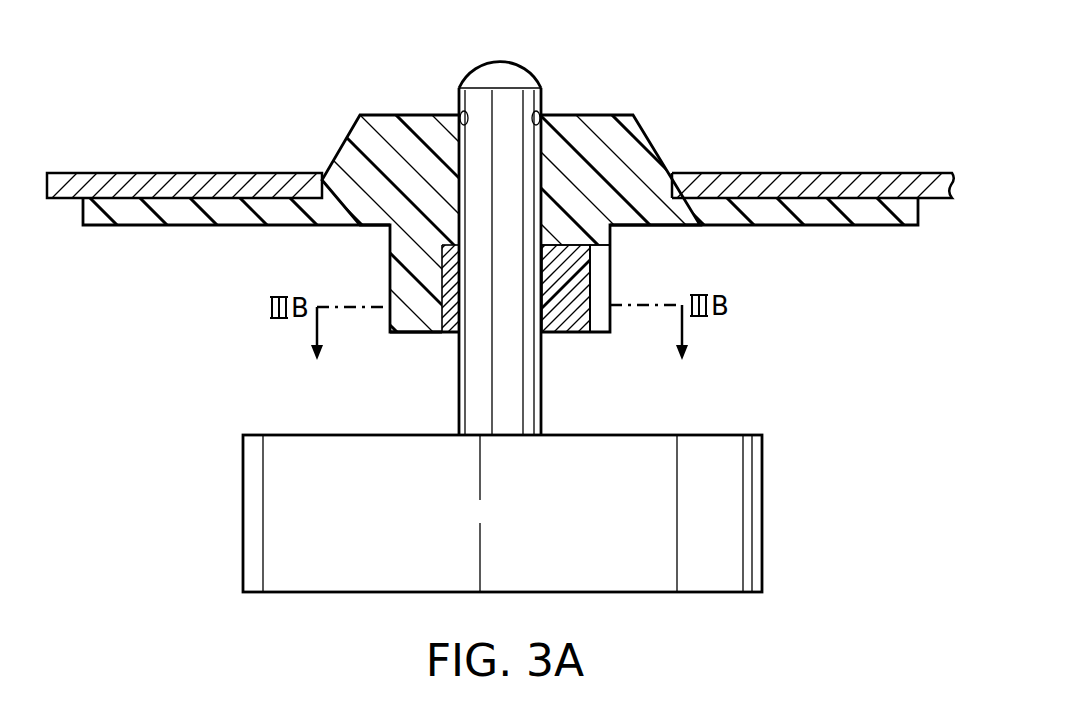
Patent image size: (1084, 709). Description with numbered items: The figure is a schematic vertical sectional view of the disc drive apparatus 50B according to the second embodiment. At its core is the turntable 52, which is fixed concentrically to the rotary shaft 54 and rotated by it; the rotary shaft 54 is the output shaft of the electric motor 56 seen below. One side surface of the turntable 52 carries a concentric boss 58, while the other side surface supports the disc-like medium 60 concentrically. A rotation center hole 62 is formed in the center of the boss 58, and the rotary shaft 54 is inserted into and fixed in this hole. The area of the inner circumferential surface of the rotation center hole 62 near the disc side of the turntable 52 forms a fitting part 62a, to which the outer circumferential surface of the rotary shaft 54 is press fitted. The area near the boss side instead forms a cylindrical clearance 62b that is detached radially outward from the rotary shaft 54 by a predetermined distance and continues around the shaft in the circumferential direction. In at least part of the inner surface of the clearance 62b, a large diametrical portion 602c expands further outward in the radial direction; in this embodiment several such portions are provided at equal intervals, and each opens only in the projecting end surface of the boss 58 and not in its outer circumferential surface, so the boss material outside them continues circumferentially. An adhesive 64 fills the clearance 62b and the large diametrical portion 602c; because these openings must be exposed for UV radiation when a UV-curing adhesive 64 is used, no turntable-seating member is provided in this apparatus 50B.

The rotary shaft 54 is at (497, 62).
The rotation center hole 62 is at (457, 108).
The fitting part 62a is at (538, 108).
The clearance 62b is at (447, 333).
The boss 58 is at (392, 334).
The adhesive 64 is at (560, 336).
The large diametrical portion 602c is at (593, 333).
The disc-like medium 60 is at (866, 180).
The turntable 52 is at (130, 217).
The electric motor 56 is at (770, 512).
The disc drive apparatus 50B is at (758, 365).